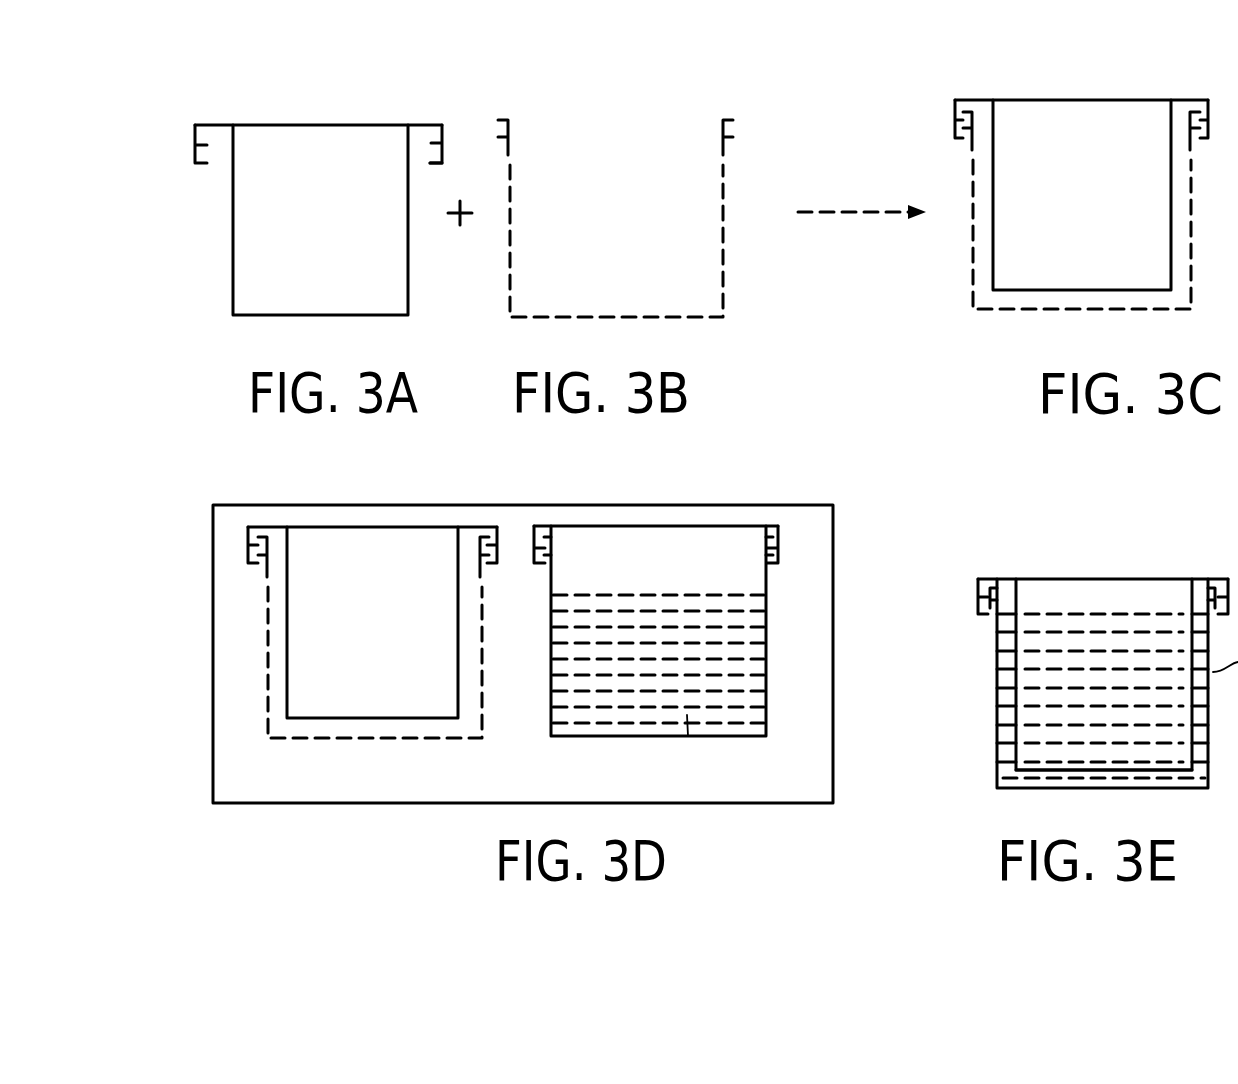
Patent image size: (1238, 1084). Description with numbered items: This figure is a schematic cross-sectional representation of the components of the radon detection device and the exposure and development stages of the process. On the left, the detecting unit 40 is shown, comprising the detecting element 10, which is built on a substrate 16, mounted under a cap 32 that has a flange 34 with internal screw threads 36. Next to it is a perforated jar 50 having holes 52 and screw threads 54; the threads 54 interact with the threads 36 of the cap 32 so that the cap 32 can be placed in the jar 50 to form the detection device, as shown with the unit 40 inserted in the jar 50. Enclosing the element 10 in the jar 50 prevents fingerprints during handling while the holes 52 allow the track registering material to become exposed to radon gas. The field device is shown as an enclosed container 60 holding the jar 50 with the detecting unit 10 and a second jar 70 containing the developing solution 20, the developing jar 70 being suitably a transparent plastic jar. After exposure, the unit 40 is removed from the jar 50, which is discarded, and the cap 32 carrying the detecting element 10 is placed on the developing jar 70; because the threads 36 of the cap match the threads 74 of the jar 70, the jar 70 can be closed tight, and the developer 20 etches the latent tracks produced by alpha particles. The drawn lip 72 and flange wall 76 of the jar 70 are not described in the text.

In FIG. 3A, the detecting element 10 is at (409, 316).
In FIG. 3E, the substrate 16 is at (1197, 773).
In FIG. 3D, the developing solution 20 is at (743, 674).
In FIG. 3A, the cap 32 is at (414, 124).
In FIG. 3A, the flange 34 is at (444, 136).
In FIG. 3A, the internal screw threads 36 is at (436, 152).
In FIG. 3A, the detecting unit 40 is at (349, 209).
In FIG. 3C, the detecting unit 40 is at (1074, 88).
In FIG. 3D, the detecting unit 40 is at (393, 512).
In FIG. 3E, the detecting unit 40 is at (1127, 566).
In FIG. 3B, the perforated jar 50 is at (652, 240).
In FIG. 3C, the perforated jar 50 is at (1039, 321).
In FIG. 3D, the perforated jar 50 is at (474, 738).
In FIG. 3B, the holes 52 is at (727, 292).
In FIG. 3B, the screw threads 54 is at (731, 130).
In FIG. 3D, the enclosed container 60 is at (823, 470).
In FIG. 3D, the developing jar 70 is at (709, 647).
In FIG. 3D, the bath container top flange 72 is at (764, 518).
In FIG. 3D, the threads 74 is at (758, 547).
In FIG. 3D, the bath container flange wall 76 is at (768, 563).